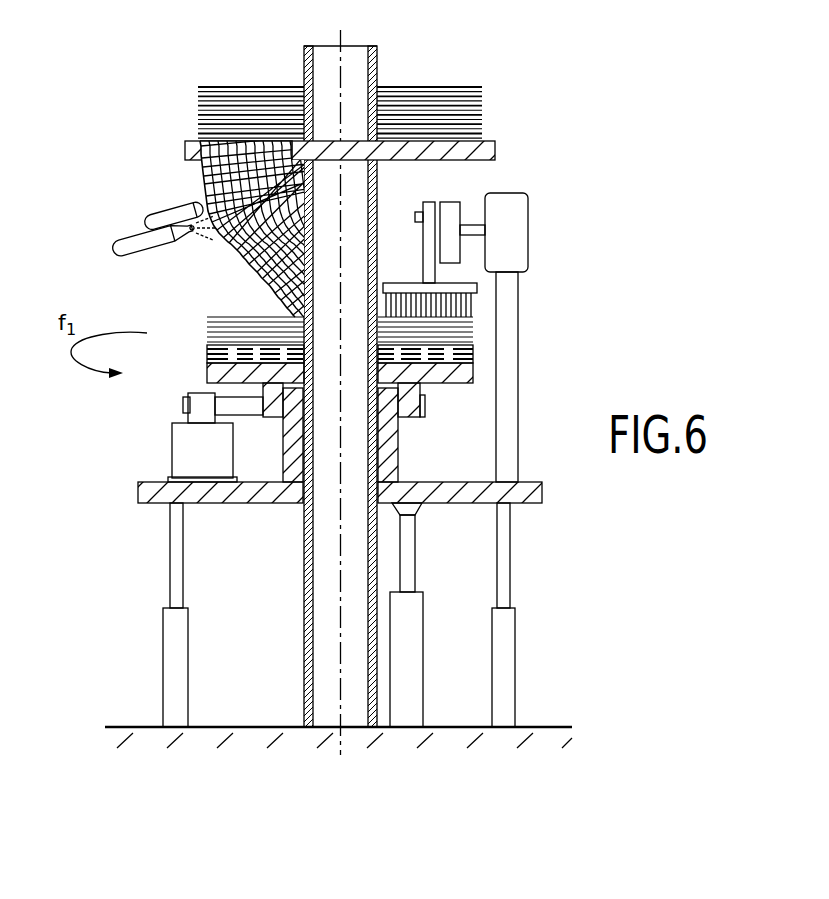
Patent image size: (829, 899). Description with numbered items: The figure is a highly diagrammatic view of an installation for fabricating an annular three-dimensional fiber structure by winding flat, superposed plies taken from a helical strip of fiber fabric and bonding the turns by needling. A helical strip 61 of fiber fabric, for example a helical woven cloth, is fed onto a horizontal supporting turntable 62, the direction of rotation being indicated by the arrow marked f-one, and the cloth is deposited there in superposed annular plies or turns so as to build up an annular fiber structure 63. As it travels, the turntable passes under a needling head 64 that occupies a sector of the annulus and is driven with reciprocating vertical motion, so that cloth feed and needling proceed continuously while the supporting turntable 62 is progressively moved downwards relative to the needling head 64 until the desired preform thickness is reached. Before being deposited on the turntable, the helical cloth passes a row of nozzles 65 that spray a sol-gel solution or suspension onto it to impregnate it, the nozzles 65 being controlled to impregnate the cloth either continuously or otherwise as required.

The helical strip 61 is at (250, 270).
The supporting turntable 62 is at (452, 376).
The annular fiber structure 63 is at (480, 337).
The needling head 64 is at (401, 283).
The nozzles 65 is at (150, 222).